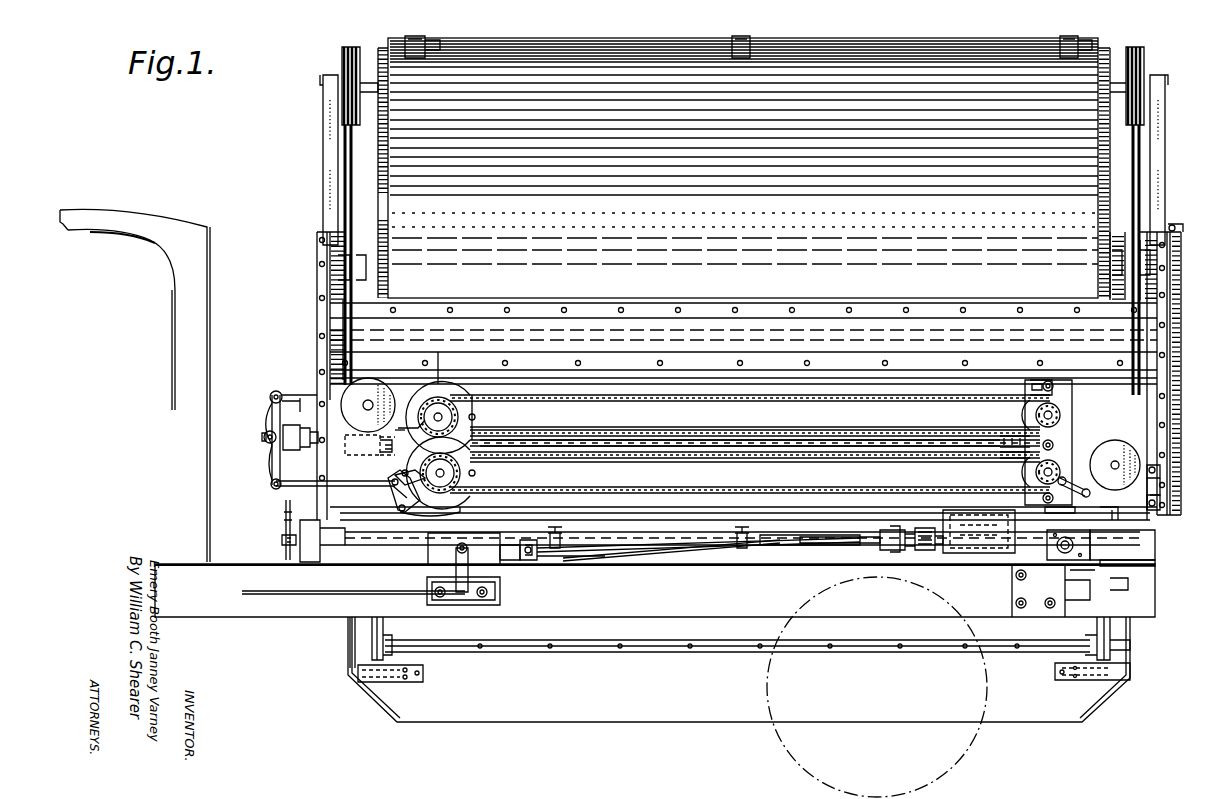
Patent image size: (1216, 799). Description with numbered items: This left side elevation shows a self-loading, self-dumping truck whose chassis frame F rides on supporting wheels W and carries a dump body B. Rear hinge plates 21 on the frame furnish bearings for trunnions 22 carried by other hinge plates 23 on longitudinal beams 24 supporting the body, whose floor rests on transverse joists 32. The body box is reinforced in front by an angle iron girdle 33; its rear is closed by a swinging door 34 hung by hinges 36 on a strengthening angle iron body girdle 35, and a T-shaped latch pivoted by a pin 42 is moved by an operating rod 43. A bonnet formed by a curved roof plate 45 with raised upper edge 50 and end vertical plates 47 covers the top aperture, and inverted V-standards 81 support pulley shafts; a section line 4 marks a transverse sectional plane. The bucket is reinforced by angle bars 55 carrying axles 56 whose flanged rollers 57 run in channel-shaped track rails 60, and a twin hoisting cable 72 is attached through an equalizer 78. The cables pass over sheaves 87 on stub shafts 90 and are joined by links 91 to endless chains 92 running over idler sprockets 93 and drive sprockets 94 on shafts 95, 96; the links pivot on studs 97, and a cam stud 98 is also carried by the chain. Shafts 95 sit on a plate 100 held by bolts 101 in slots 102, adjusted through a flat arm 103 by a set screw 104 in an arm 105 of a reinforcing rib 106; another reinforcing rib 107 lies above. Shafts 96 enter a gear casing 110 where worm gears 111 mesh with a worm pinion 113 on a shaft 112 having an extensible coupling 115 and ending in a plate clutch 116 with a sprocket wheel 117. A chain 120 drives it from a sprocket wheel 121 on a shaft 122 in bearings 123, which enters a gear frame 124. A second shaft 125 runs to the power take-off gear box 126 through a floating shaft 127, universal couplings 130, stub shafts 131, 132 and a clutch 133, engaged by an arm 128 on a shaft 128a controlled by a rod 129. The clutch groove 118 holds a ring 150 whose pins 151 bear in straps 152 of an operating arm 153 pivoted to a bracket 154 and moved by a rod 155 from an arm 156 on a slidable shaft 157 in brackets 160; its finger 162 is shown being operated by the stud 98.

The section line 4 is at (484, 784).
The dump body B is at (316, 298).
The curved roof plate 45 is at (720, 240).
The upper edge of bonnet roof 50 is at (1068, 58).
The inverted V-standards 81 is at (1165, 160).
The angle iron girdle 33 is at (316, 270).
The swinging door 34 is at (1182, 345).
The strengthening angle iron body girdle 35 is at (1166, 302).
The hinges 36 is at (1175, 232).
The longitudinal reenforcing rib 107 is at (690, 366).
The shafts 96 is at (470, 392).
The worm pinion 113 is at (755, 422).
The drive sprockets 94 is at (548, 418).
The cam stud 98 is at (750, 478).
The transverse joists 32 is at (742, 530).
The bearings 123 is at (560, 528).
The chassis frame F is at (655, 590).
The angle bars 55 is at (568, 645).
The axles 56 is at (448, 650).
The channel-shaped track rails 60 is at (372, 648).
The flanged rollers 57 is at (1118, 582).
The equalizer 78 is at (348, 680).
The supporting wheels W is at (978, 738).
The worm shaft 112 is at (368, 405).
The twin hoisting cable 72 is at (345, 310).
The links 91 is at (398, 425).
The worm gears 111 is at (440, 375).
The gear casing 110 is at (450, 380).
The sheaves 87 is at (345, 422).
The stub shafts 90 is at (1115, 448).
The plate clutch 116 is at (276, 392).
The bracket 154 is at (272, 392).
The sprocket wheel 117 is at (298, 410).
The operating arm 153 is at (270, 404).
The spaced straps 152 is at (268, 430).
The annular groove 118 is at (262, 430).
The diametrical pins 151 is at (262, 448).
The ring 150 is at (268, 462).
The rod 155 is at (276, 488).
The finger 162 is at (380, 486).
The extensible coupling 115 is at (385, 462).
The arm 156 is at (448, 498).
The slidable shaft 157 is at (420, 508).
The brackets 160 is at (445, 514).
The chain 120 is at (285, 517).
The sprocket wheel 121 is at (283, 546).
The shaft 128a is at (440, 552).
The shaft 122 is at (355, 562).
The arm 128 is at (427, 580).
The rod 129 is at (272, 592).
The gear box 126 is at (488, 585).
The stub shaft 132 is at (512, 568).
The universal couplings 130 is at (605, 572).
The second shaft 125 is at (615, 568).
The floating shaft 127 is at (710, 555).
The clutch 133 is at (812, 548).
The stub shaft 131 is at (905, 552).
The gear frame 124 is at (955, 520).
The shafts 95 is at (1068, 380).
The plate 100 is at (1052, 380).
The bolts 101 is at (1048, 383).
The slots 102 is at (1040, 385).
The idler sprockets 93 is at (1035, 416).
The chains 92 is at (905, 396).
The reenforcing rib 106 is at (860, 430).
The set screw 104 is at (975, 435).
The arm 105 is at (1005, 455).
The flat arm 103 is at (1030, 470).
The studs 97 is at (1050, 508).
The pin 42 is at (1165, 460).
The vertical plates 47 is at (1170, 468).
The operating rod 43 is at (1165, 498).
The trunnions 22 is at (1078, 545).
The longitudinal beams 24 is at (1155, 546).
The hinge plates 23 is at (1125, 560).
The hinge plates 21 is at (1022, 580).